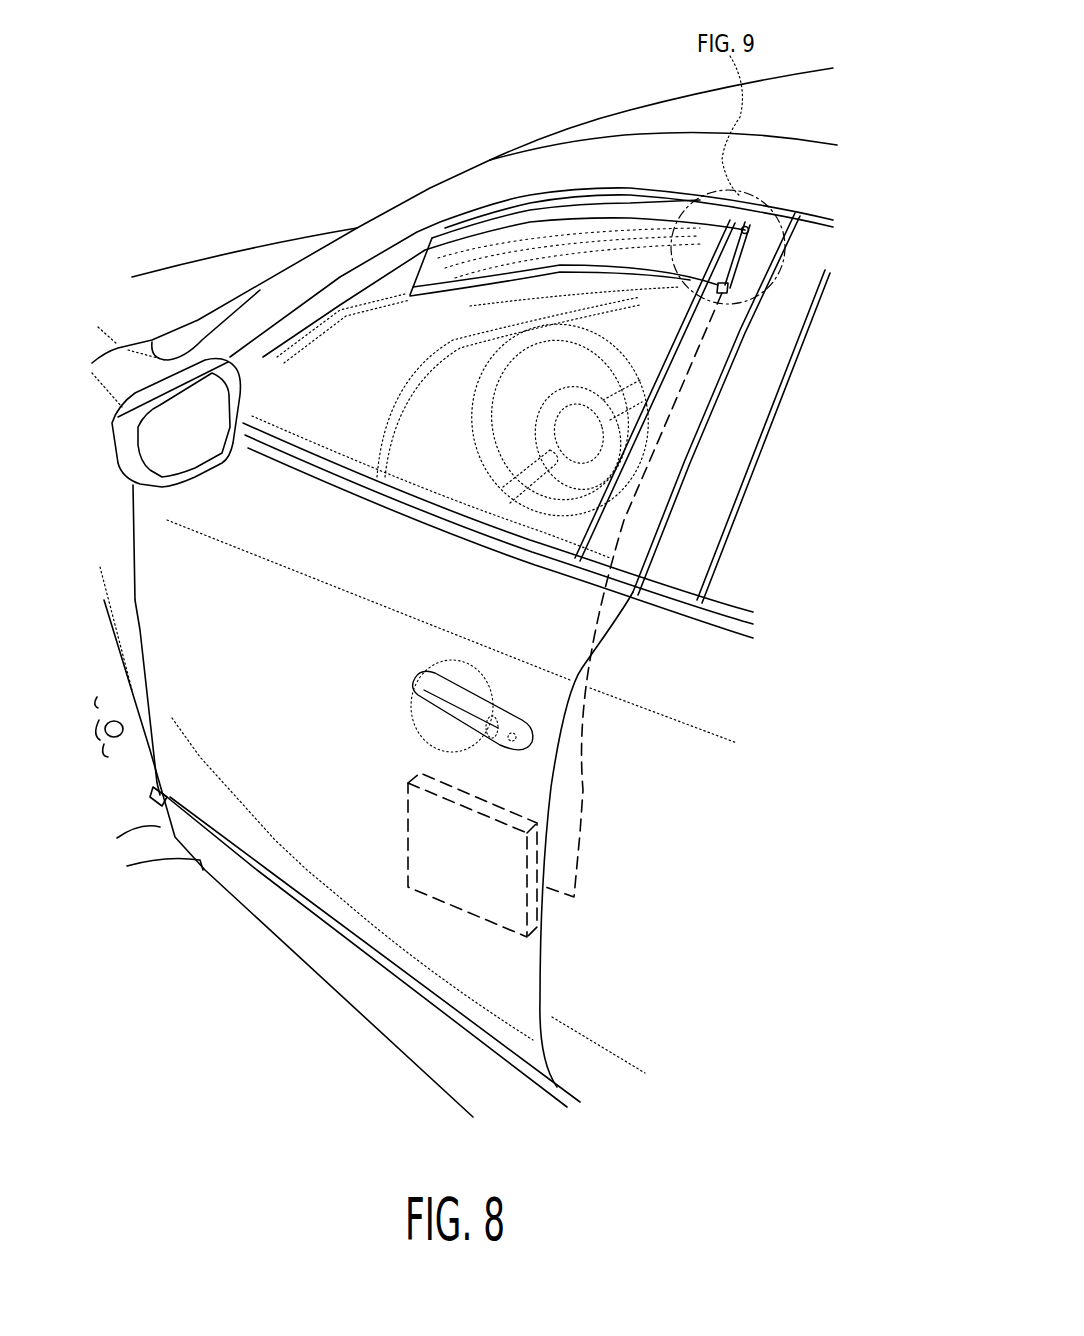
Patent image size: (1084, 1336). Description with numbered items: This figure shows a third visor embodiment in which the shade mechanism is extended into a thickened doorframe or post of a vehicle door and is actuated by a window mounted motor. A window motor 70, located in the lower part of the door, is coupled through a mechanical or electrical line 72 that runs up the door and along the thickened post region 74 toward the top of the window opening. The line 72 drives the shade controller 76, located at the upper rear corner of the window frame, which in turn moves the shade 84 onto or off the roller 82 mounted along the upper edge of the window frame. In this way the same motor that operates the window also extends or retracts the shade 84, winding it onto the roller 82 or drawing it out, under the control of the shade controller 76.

The window motor 70 is at (502, 905).
The mechanical or electrical line 72 is at (578, 763).
The door frame pillar section 74 is at (688, 372).
The shade controller 76 is at (752, 231).
The roller 82 is at (467, 229).
The shade 84 is at (443, 260).